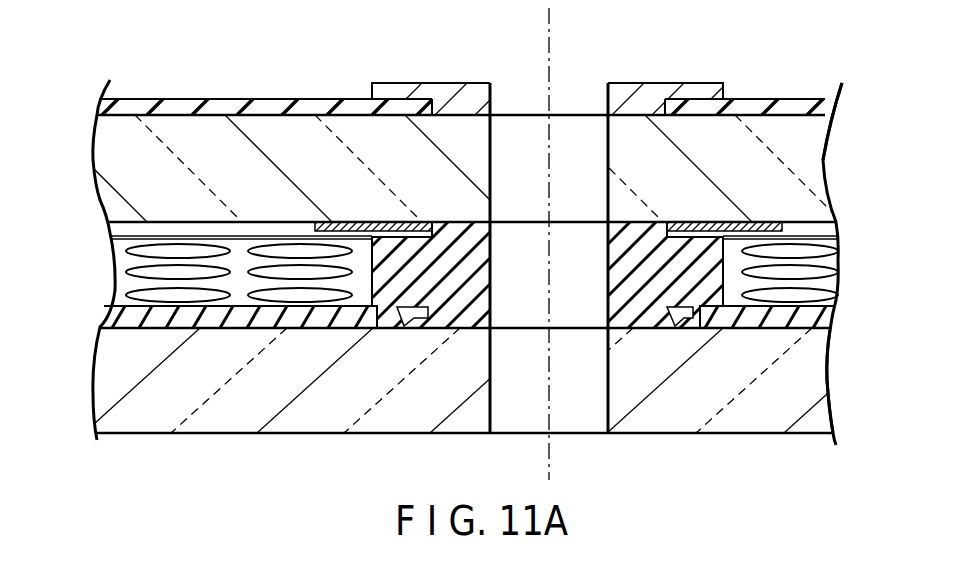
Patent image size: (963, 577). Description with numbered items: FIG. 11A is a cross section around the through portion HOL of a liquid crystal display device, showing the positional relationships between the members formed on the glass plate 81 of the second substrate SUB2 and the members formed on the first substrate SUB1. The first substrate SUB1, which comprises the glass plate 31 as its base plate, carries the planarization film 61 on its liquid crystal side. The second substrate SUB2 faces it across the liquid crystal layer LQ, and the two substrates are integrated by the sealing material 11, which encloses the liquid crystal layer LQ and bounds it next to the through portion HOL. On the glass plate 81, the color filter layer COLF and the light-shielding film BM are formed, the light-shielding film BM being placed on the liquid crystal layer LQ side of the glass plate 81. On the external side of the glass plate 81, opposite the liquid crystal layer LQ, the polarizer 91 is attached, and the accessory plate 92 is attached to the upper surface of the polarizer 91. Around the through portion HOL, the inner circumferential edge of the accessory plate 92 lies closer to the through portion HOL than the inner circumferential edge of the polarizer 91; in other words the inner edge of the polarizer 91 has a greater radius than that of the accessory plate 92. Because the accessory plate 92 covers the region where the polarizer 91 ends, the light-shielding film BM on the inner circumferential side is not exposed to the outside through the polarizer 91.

The sealing material 11 is at (481, 287).
The glass plate 31 is at (108, 389).
The planarization film 61 is at (108, 323).
The glass plate 81 is at (108, 183).
The polarizer 91 is at (219, 100).
The accessory plate 92 is at (388, 83).
The light-shielding film BM is at (400, 224).
The color filter layer COLF is at (120, 232).
The through portion HOL is at (571, 131).
The liquid crystal layer LQ is at (830, 293).
The first substrate SUB1 is at (843, 370).
The second substrate SUB2 is at (840, 150).